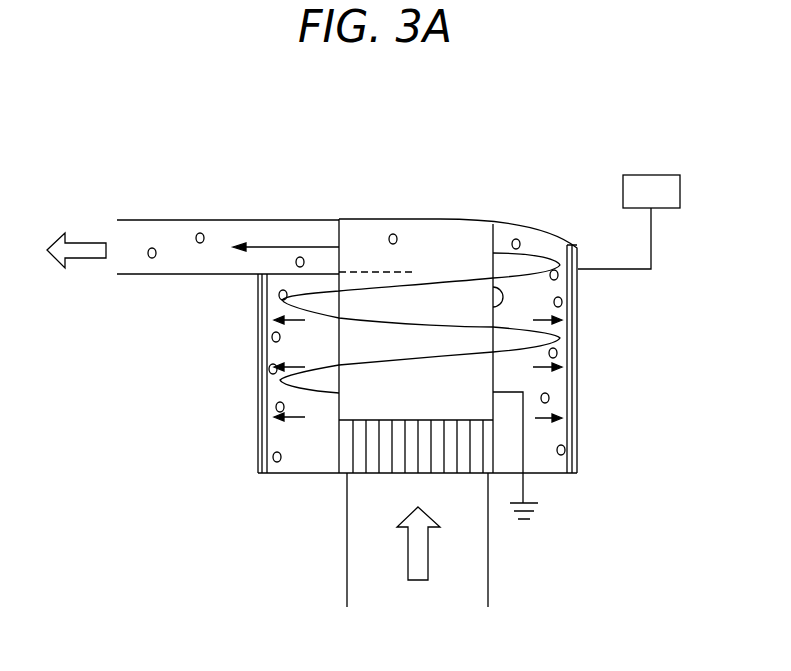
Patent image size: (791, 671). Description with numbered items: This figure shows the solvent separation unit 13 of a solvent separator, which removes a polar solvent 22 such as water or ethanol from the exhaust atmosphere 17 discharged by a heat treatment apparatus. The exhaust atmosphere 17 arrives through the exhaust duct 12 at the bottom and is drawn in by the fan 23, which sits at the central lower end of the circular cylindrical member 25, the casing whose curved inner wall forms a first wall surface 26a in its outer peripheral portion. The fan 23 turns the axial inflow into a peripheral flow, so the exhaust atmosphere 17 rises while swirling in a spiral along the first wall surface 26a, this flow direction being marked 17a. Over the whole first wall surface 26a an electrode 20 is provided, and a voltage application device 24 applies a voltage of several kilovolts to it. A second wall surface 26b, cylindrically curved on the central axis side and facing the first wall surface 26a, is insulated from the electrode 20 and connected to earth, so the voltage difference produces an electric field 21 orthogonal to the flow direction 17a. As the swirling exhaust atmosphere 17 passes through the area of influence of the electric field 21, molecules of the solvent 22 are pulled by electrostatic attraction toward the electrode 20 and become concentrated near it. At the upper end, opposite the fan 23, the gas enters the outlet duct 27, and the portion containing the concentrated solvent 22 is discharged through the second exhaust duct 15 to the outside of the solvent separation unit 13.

The exhaust duct 12 is at (489, 580).
The solvent separation unit 13 is at (288, 204).
The second exhaust duct 15 is at (140, 222).
The exhaust atmosphere 17 is at (420, 582).
The direction in which the exhaust atmosphere flows 17a is at (355, 293).
The electrode 20 is at (263, 356).
The electric field 21 is at (299, 421).
The solvent 22 is at (155, 249).
The fan 23 is at (340, 462).
The voltage application device 24 is at (651, 175).
The circular cylindrical member 25 is at (520, 223).
The first wall surface 26a is at (260, 295).
The second wall surface 26b is at (492, 305).
The outlet duct 27 is at (325, 230).